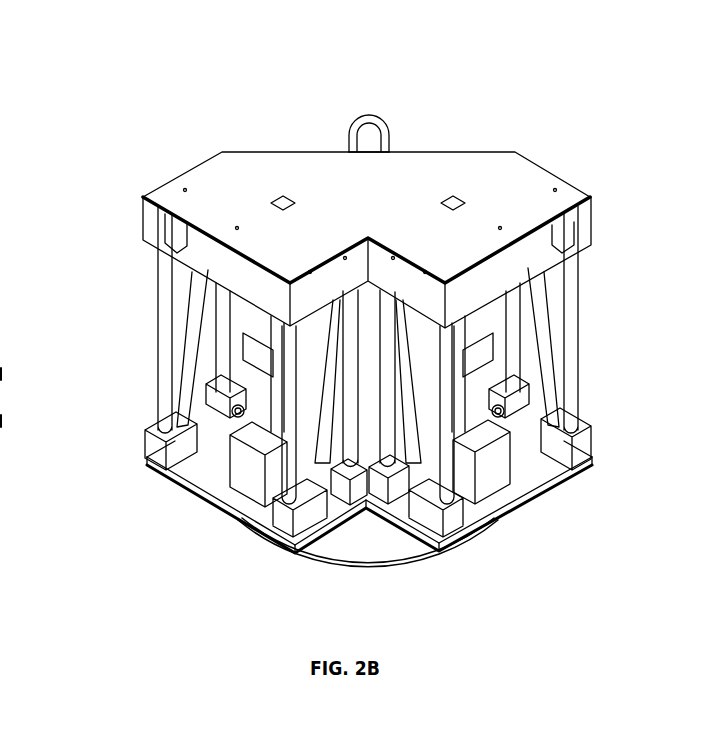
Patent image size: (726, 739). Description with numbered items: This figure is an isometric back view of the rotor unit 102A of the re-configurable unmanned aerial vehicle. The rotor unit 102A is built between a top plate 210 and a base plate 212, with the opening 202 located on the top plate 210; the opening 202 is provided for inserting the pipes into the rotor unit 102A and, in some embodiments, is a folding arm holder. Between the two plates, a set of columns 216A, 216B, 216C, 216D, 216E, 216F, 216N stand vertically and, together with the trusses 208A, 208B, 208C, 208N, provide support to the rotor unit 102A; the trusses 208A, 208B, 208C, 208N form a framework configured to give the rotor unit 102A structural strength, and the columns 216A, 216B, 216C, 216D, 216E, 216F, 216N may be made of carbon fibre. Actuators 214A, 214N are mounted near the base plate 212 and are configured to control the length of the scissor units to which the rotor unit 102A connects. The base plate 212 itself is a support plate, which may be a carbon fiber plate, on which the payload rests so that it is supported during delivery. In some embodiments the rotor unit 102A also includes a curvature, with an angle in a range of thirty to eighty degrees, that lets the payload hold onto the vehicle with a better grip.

The rotor unit 102A is at (156, 124).
The opening 202 is at (374, 133).
The top plate 210 is at (523, 160).
The base plate 212 is at (237, 512).
The actuator 214A is at (270, 433).
The actuator 214N is at (480, 427).
The column 216A is at (160, 286).
The column 216B is at (220, 363).
The column 216C is at (286, 493).
The column 216D is at (355, 470).
The column 216E is at (392, 440).
The column 216F is at (448, 466).
The column 216N is at (578, 280).
The truss 208A is at (187, 336).
The truss 208B is at (313, 468).
The truss 208C is at (427, 468).
The truss 208N is at (543, 318).